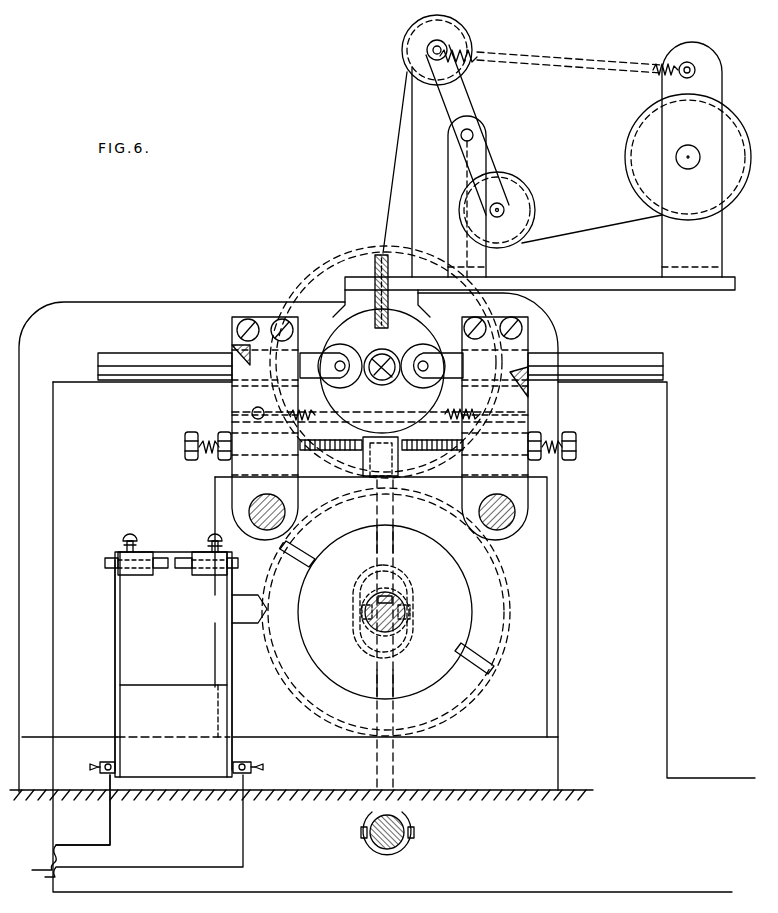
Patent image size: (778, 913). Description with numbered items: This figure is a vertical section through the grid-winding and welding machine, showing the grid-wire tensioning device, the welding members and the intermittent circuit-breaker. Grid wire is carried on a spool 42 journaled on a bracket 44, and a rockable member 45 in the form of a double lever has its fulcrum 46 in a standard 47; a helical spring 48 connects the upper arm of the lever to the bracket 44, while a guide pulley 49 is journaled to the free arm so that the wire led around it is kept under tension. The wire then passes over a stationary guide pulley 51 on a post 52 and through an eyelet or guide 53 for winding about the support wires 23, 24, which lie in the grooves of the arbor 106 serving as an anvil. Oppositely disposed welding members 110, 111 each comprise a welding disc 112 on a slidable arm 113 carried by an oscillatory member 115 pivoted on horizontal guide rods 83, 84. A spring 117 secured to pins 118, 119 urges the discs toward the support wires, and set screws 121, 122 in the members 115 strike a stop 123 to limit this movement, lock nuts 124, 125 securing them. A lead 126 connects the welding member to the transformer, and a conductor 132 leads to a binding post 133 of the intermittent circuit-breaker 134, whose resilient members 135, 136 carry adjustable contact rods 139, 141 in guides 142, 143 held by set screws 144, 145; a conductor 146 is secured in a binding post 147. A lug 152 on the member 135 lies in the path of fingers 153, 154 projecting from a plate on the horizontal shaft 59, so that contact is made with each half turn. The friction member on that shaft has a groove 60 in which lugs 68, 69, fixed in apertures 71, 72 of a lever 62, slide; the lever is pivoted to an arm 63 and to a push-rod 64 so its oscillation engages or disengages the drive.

The support wire 23 is at (374, 357).
The support wire 24 is at (399, 383).
The spool 42 is at (672, 157).
The bracket 44 is at (696, 48).
The rockable member 45 is at (493, 165).
The fulcrum 46 is at (473, 134).
The standard 47 is at (485, 266).
The helical spring 48 is at (478, 62).
The guide pulley 49 is at (532, 219).
The stationary guide pulley 51 is at (404, 52).
The post 52 is at (412, 117).
The eyelet or guide 53 is at (376, 257).
The horizontal shaft 59 is at (402, 605).
The groove 60 is at (396, 626).
The lever 62 is at (396, 748).
The arm 63 is at (362, 462).
The push-rod 64 is at (404, 840).
The lug 68 is at (366, 622).
The lug 69 is at (414, 612).
The aperture 71 is at (360, 608).
The aperture 72 is at (412, 622).
The horizontal guide rod 83 is at (250, 513).
The horizontal guide rod 84 is at (505, 516).
The arbor 106 is at (380, 383).
The welding member 110 is at (540, 345).
The welding member 111 is at (228, 347).
The welding disc 112 is at (346, 358).
The slidable arm 113 is at (105, 356).
The oscillatory member 115 is at (292, 411).
The spring 117 is at (316, 418).
The pin 118 is at (540, 424).
The pin 119 is at (251, 409).
The set screw 121 is at (556, 458).
The set screw 122 is at (215, 450).
The stop 123 is at (400, 462).
The lock nut 124 is at (538, 462).
The lock nut 125 is at (226, 462).
The lead 126 is at (668, 532).
The conductor 132 is at (54, 478).
The binding post 133 is at (265, 772).
The intermittent circuit-breaker 134 is at (173, 664).
The resilient member 135 is at (250, 674).
The resilient member 136 is at (116, 657).
The contact rod 139 is at (185, 553).
The contact rod 141 is at (147, 556).
The guide 142 is at (205, 576).
The guide 143 is at (136, 576).
The set screw 144 is at (224, 546).
The set screw 145 is at (124, 541).
The conductor 146 is at (116, 838).
The binding post 147 is at (106, 762).
The lug 152 is at (262, 612).
The finger 153 is at (303, 552).
The finger 154 is at (487, 669).